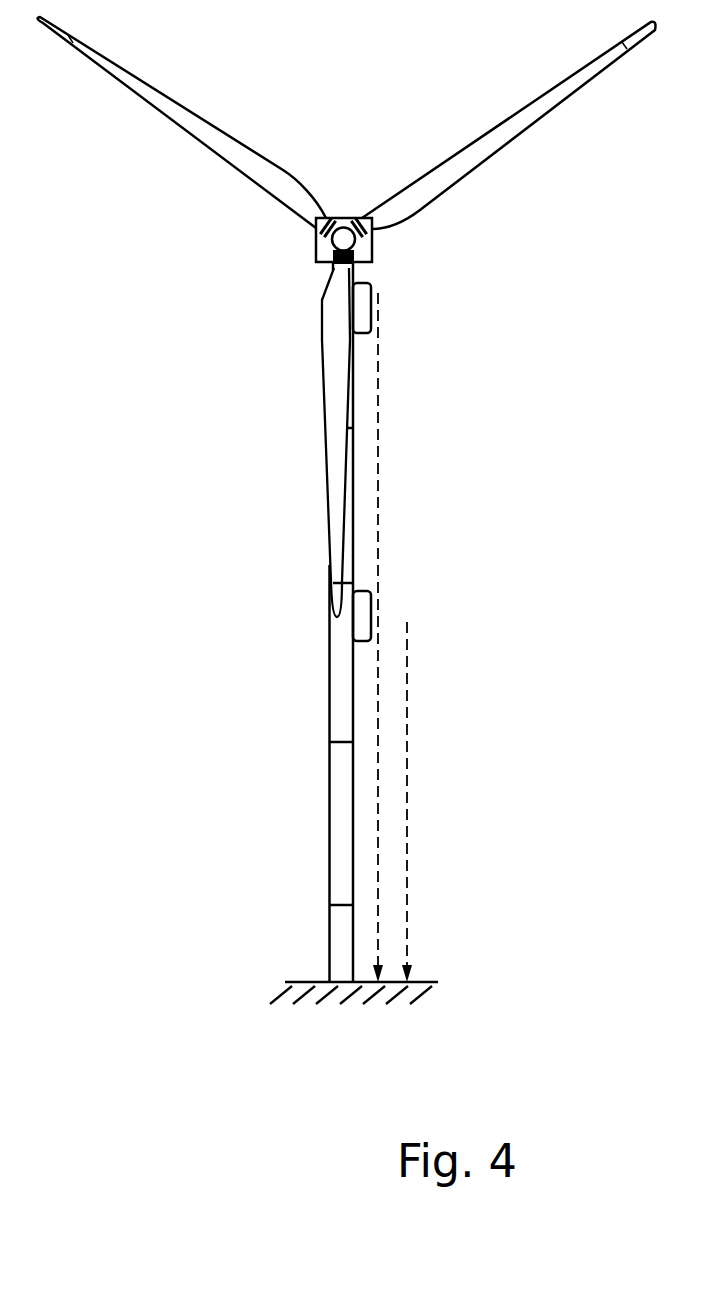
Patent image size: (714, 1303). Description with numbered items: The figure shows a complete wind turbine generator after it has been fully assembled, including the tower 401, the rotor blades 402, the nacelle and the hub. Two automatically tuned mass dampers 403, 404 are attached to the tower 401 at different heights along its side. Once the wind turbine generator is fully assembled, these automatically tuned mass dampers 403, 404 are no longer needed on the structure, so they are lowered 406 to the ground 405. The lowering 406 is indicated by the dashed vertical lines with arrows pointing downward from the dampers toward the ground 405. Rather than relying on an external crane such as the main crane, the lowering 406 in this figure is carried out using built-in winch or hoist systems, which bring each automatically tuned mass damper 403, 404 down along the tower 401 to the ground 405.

The tower 401 is at (348, 687).
The rotor blades 402 is at (236, 156).
The automatically tuned mass damper 403 is at (358, 615).
The automatically tuned mass damper 404 is at (360, 311).
The ground 405 is at (342, 988).
The lowering 406 is at (420, 811).